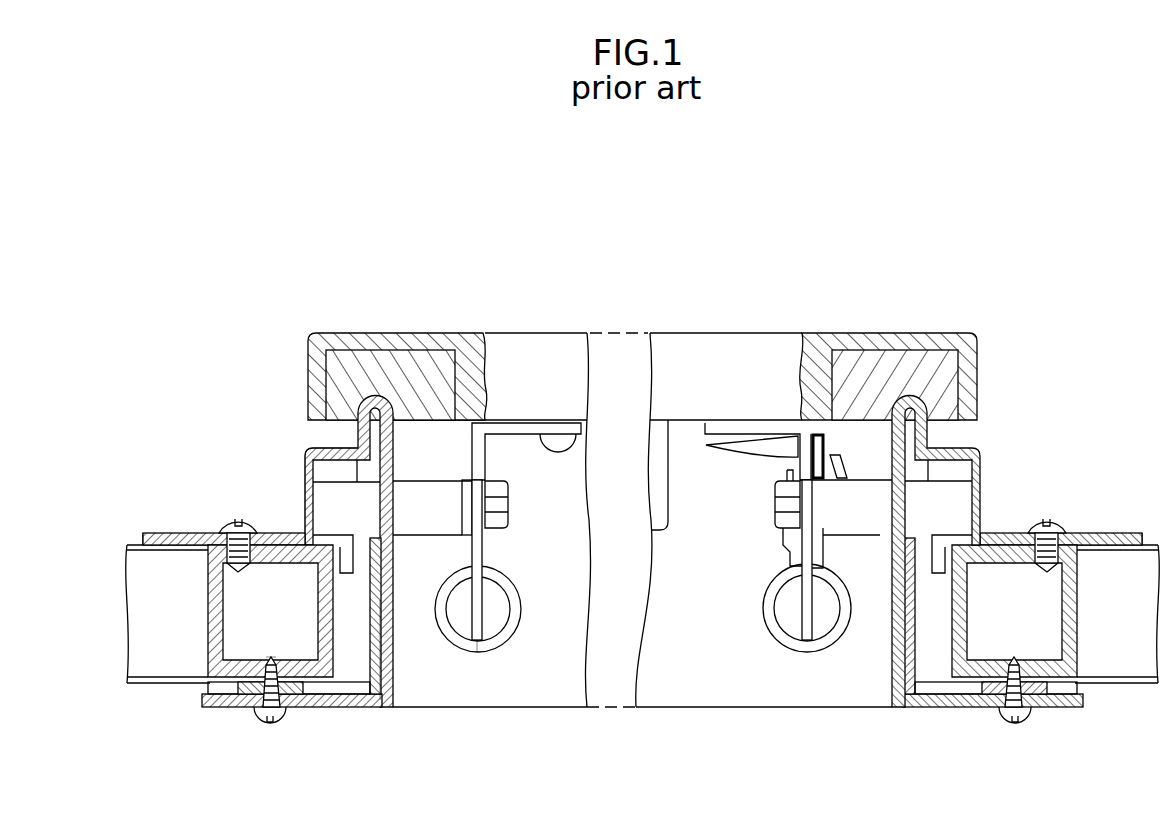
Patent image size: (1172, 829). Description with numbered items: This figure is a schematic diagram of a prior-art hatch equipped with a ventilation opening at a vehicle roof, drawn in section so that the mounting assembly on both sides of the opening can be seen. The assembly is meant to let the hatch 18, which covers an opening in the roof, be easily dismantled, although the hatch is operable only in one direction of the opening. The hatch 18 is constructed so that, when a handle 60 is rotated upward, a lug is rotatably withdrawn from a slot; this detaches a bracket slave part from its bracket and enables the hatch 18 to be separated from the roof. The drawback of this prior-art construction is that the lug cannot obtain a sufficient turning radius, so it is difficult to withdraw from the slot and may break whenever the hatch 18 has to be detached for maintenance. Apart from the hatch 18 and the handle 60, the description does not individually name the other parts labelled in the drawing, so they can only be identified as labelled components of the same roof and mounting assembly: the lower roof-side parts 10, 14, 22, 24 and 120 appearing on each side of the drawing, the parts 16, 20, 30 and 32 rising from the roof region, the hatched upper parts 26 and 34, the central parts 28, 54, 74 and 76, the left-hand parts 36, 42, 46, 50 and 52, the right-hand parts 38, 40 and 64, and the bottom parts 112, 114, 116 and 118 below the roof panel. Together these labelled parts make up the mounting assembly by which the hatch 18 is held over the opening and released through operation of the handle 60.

The panel frame 10 is at (128, 538).
The housing box 14 is at (203, 620).
The bracket 16 is at (300, 443).
The hatch 18 is at (885, 330).
The bracket wall 20 is at (310, 497).
The mounting plate 22 is at (200, 535).
The screw 24 is at (243, 572).
The cap 26 is at (378, 403).
The support plate 28 is at (380, 647).
The bracket flange 30 is at (338, 467).
The bracket leg 32 is at (303, 533).
The filler block 34 is at (400, 352).
The inner ring 36 is at (487, 602).
The ring holder 38 is at (797, 623).
The hook 40 is at (737, 463).
The bolt 42 is at (480, 553).
The ring 46 is at (493, 623).
The ring base 50 is at (482, 650).
The nut 52 is at (512, 465).
The body 54 is at (440, 476).
The handle 60 is at (737, 445).
The sleeve 64 is at (793, 553).
The ledge bracket 74 is at (534, 424).
The protrusion 76 is at (562, 451).
The spacer strip 112 is at (347, 703).
The screw 114 is at (297, 713).
The bracket leg 116 is at (397, 702).
The bottom plate 118 is at (228, 708).
The screw 120 is at (270, 653).